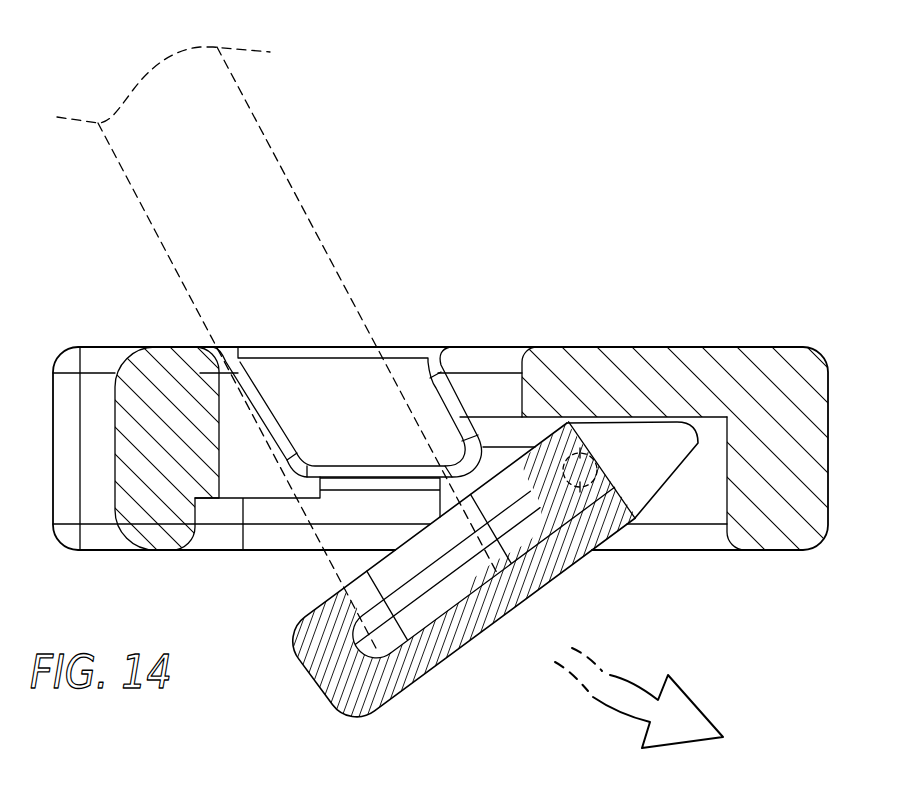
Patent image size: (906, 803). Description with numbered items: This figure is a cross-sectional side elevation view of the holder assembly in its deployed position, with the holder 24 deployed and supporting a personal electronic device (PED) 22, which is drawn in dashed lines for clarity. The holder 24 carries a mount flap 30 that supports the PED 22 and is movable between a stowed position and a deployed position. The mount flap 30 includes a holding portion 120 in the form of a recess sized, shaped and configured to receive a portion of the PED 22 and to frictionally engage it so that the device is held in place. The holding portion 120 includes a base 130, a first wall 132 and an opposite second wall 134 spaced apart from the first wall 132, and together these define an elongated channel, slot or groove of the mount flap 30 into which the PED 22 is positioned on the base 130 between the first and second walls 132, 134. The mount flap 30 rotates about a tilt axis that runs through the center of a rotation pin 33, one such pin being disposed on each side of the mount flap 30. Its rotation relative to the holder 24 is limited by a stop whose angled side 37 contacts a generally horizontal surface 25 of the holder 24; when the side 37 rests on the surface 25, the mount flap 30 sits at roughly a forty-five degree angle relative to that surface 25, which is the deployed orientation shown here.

The personal electronic device (PED) 22 is at (247, 100).
The holder 24 is at (62, 355).
The generally horizontal surface 25 is at (653, 415).
The mount flap 30 is at (336, 668).
The rotation pin 33 is at (590, 487).
The side of the stop 37 is at (637, 418).
The holding portion 120 is at (318, 589).
The base 130 is at (407, 645).
The first wall 132 is at (353, 640).
The second wall 134 is at (523, 458).